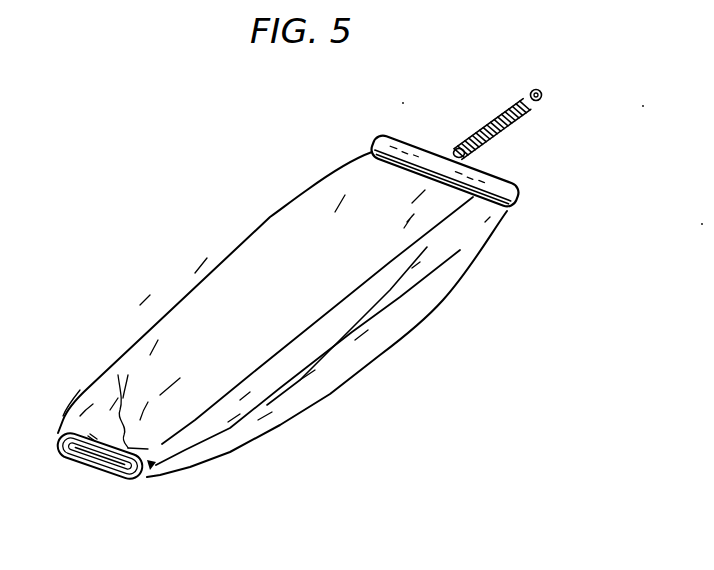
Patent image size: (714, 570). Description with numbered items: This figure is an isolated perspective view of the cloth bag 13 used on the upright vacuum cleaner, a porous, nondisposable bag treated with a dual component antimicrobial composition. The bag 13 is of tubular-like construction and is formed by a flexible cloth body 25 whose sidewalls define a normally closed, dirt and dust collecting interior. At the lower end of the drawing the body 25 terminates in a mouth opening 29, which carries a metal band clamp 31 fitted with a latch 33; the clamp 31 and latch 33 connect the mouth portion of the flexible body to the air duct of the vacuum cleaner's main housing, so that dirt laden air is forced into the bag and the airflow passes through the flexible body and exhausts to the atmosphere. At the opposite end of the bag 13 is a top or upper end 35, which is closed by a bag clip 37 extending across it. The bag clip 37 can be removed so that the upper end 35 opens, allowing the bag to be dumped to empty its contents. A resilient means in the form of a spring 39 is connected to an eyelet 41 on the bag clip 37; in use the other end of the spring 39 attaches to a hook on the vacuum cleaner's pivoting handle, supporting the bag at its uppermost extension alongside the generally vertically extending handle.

The cloth bag 13 is at (263, 158).
The cloth body 25 is at (332, 370).
The mouth opening 29 is at (108, 470).
The metal band clamp 31 is at (147, 477).
The latch 33 is at (120, 388).
The upper end 35 is at (508, 213).
The bag clip 37 is at (412, 150).
The spring 39 is at (530, 117).
The eyelet 41 is at (458, 140).